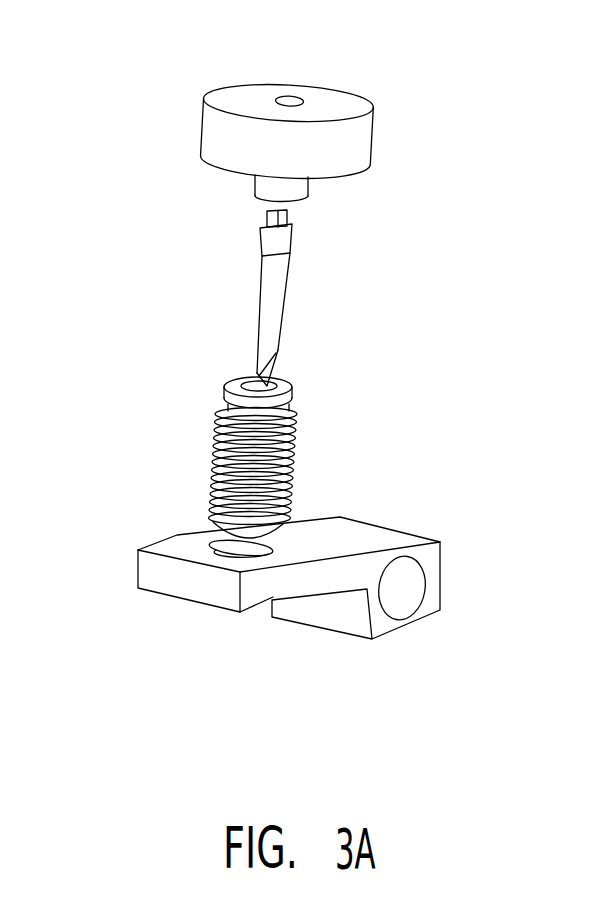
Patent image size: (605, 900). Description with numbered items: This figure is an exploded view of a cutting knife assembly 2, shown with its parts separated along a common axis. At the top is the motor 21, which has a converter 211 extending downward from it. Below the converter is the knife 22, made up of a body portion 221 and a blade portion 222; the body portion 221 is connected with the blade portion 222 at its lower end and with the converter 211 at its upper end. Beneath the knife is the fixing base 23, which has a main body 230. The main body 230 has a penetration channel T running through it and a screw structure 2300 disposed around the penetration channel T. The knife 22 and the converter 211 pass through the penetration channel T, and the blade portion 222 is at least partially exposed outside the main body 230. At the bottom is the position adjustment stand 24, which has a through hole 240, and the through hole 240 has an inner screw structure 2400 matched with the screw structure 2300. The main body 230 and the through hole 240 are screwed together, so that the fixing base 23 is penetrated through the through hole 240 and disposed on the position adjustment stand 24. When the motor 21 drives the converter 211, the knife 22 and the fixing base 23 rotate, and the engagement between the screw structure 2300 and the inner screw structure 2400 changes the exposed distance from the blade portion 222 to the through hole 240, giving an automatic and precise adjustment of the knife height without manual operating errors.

The cutting knife assembly 2 is at (562, 44).
The motor 21 is at (371, 130).
The converter 211 is at (289, 223).
The knife 22 is at (384, 319).
The body portion 221 is at (272, 300).
The blade portion 222 is at (268, 372).
The penetration channel T is at (237, 375).
The fixing base 23 is at (241, 454).
The main body 230 is at (226, 401).
The screw structure 2300 is at (206, 461).
The position adjustment stand 24 is at (269, 593).
The through hole 240 is at (250, 548).
The inner screw structure 2400 is at (233, 550).